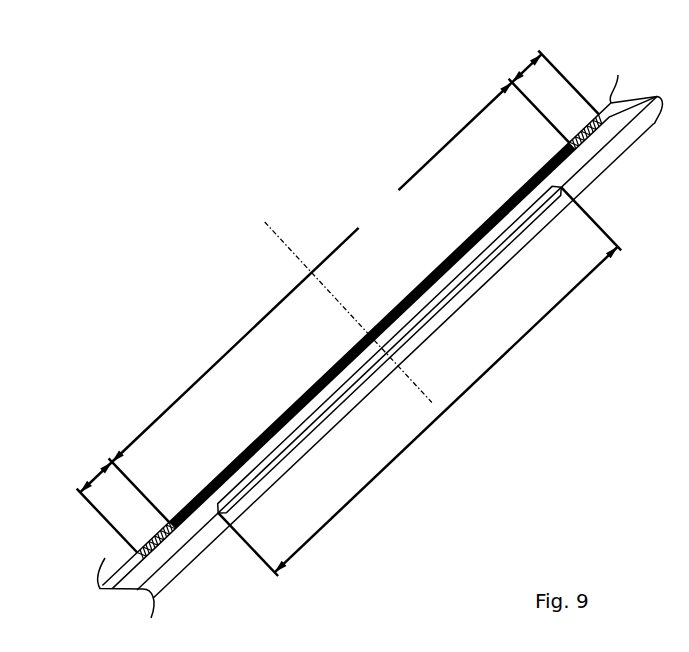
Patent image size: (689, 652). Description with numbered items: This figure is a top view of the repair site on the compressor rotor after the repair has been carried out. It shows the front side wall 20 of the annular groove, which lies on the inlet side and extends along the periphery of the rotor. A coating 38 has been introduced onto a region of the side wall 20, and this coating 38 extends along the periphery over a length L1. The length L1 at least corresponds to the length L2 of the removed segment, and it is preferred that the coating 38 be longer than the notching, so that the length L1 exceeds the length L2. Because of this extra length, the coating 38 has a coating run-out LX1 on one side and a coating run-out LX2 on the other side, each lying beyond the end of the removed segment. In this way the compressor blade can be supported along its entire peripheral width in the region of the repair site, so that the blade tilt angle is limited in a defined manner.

The front side wall 20 is at (122, 560).
The coating 38 is at (310, 388).
The length of the coating L1 is at (312, 272).
The length of the removed segment L2 is at (419, 381).
The coating run-out LX1 is at (545, 87).
The coating run-out LX2 is at (113, 496).